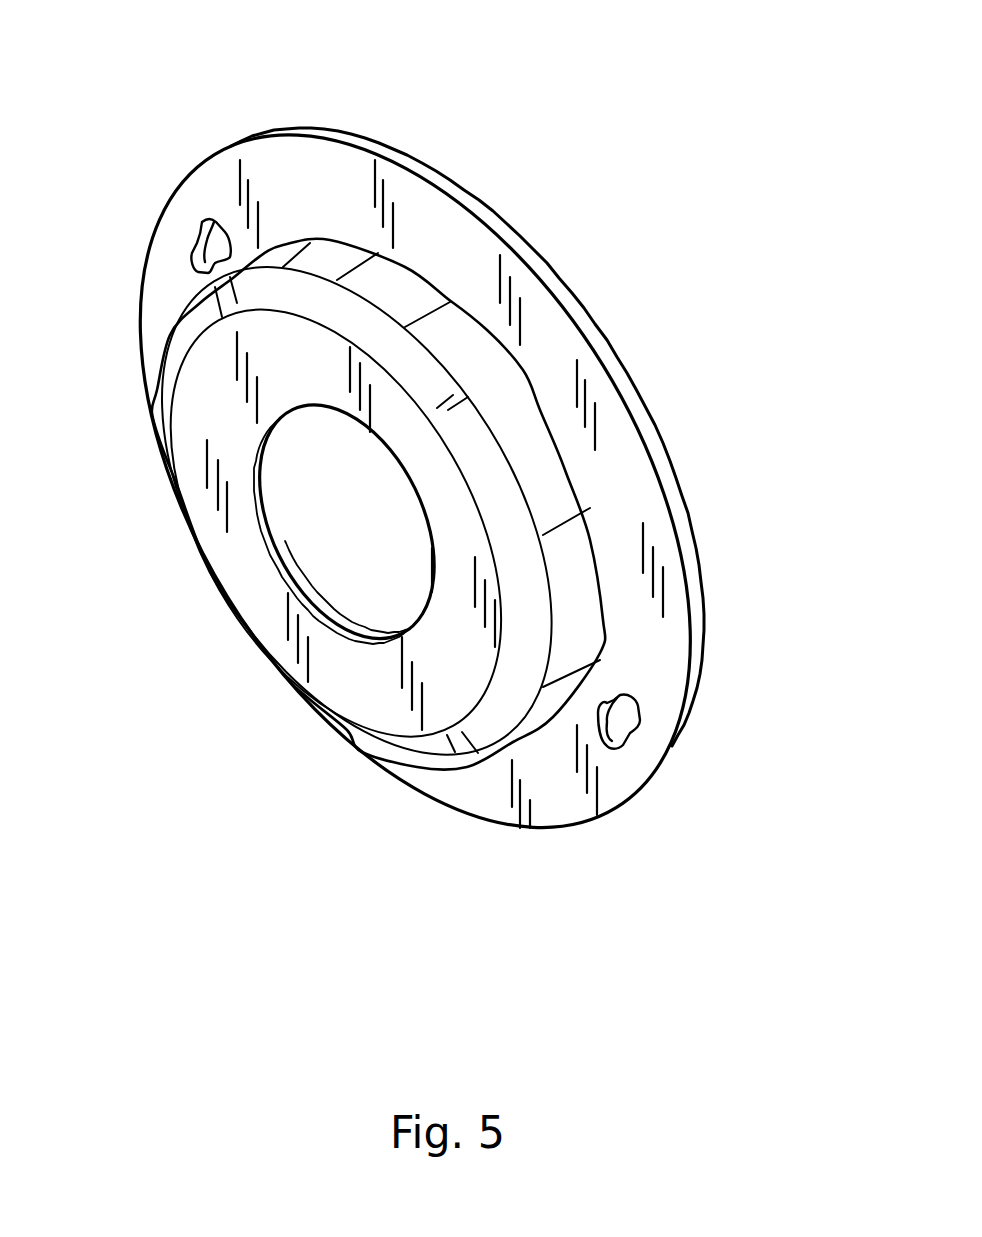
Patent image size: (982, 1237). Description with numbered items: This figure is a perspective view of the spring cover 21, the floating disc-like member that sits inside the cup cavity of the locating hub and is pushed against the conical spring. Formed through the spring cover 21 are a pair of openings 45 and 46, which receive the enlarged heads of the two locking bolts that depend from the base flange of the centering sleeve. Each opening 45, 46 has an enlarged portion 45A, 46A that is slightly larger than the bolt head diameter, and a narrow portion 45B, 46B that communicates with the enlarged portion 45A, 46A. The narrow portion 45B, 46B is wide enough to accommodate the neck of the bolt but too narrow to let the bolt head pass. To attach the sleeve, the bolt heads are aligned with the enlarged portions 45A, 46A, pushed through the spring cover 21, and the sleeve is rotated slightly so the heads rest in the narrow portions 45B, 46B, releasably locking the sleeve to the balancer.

The spring cover 21 is at (252, 592).
The opening 45 is at (201, 136).
The enlarged portion 45A is at (233, 235).
The narrow portion 45B is at (192, 260).
The opening 46 is at (686, 824).
The enlarged portion 46A is at (603, 737).
The narrow portion 46B is at (637, 700).